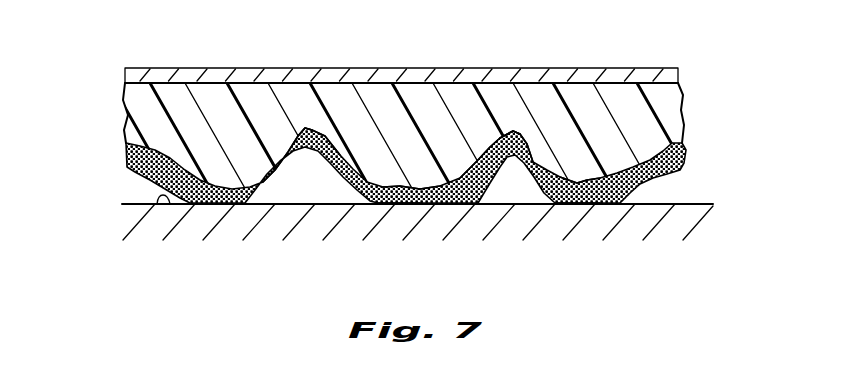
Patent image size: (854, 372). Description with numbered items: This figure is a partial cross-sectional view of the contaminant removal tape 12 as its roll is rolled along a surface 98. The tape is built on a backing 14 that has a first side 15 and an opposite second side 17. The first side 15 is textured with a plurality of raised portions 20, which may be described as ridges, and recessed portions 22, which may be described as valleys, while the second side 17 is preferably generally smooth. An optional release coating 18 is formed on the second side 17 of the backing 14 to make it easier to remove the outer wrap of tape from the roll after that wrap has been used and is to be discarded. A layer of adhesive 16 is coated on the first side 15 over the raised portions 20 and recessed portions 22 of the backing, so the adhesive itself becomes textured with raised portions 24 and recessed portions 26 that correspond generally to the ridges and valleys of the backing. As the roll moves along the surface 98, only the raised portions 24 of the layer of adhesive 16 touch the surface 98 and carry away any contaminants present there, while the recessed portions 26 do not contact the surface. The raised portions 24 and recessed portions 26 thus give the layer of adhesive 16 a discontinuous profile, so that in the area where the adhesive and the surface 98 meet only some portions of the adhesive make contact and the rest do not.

The contaminant removal tape 12 is at (131, 172).
The backing 14 is at (683, 126).
The first side 15 is at (641, 200).
The layer of adhesive 16 is at (688, 160).
The second side 17 is at (513, 81).
The release coating 18 is at (603, 74).
The raised portions 20 is at (413, 190).
The recessed portions 22 is at (303, 160).
The raised portions 24 is at (395, 207).
The recessed portions 26 is at (313, 160).
The surface 98 is at (157, 206).